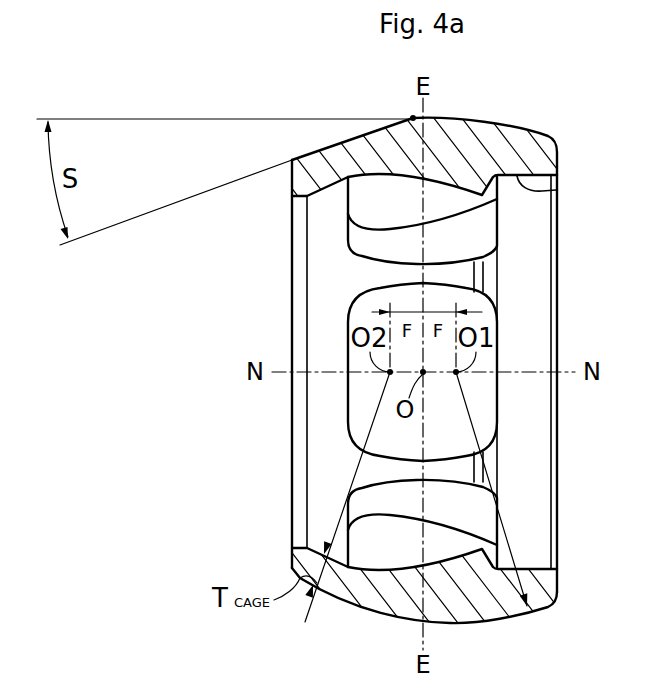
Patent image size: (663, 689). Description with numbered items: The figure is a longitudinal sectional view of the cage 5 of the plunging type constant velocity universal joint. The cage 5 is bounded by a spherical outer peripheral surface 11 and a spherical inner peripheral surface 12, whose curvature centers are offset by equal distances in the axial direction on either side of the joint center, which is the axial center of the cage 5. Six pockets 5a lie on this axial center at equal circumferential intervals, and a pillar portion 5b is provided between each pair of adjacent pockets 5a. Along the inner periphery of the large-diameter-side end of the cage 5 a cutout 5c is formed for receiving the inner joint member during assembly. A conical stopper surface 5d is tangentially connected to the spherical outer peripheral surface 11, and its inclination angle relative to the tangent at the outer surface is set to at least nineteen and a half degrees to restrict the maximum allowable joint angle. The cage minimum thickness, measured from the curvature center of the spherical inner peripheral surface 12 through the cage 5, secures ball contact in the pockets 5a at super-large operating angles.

The cage 5 is at (561, 153).
The pocket 5a is at (480, 417).
The pillar portion 5b is at (440, 275).
The cutout 5c is at (556, 190).
The stopper surface 5d is at (317, 153).
The spherical outer peripheral surface 11 is at (487, 625).
The spherical inner peripheral surface 12 is at (398, 564).